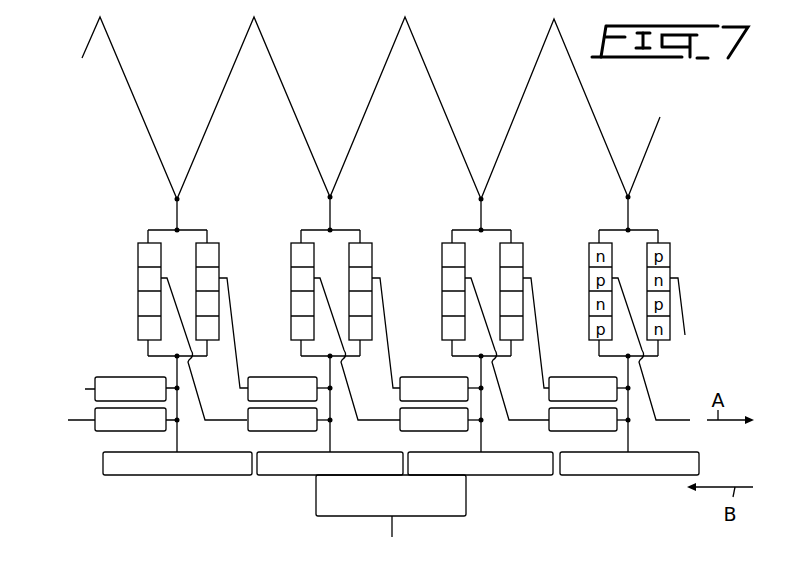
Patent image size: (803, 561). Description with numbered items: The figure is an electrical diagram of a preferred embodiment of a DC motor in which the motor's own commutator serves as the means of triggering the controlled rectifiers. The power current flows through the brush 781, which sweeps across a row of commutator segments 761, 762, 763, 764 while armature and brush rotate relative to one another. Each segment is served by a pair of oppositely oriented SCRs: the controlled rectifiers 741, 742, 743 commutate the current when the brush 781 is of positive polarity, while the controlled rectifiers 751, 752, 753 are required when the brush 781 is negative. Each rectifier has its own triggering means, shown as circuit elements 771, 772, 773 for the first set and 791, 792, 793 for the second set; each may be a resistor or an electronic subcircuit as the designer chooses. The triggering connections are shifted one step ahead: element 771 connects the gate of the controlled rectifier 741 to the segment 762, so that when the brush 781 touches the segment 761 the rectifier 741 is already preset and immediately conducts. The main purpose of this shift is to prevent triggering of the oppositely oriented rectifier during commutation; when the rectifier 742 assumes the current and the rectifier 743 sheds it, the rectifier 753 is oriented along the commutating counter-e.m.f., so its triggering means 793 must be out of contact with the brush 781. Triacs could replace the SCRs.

The controlled rectifier 741 is at (138, 255).
The controlled rectifier 742 is at (291, 257).
The controlled rectifier 743 is at (442, 260).
The controlled rectifier 751 is at (218, 243).
The controlled rectifier 752 is at (363, 243).
The controlled rectifier 753 is at (512, 243).
The segment 761 is at (177, 463).
The segment 762 is at (330, 463).
The segment 763 is at (480, 463).
The segment 764 is at (629, 463).
The triggering means 771 is at (289, 419).
The triggering means 772 is at (440, 419).
The triggering means 773 is at (588, 419).
The brush 781 is at (391, 506).
The triggering means 791 is at (289, 389).
The triggering means 792 is at (440, 389).
The triggering means 793 is at (588, 389).